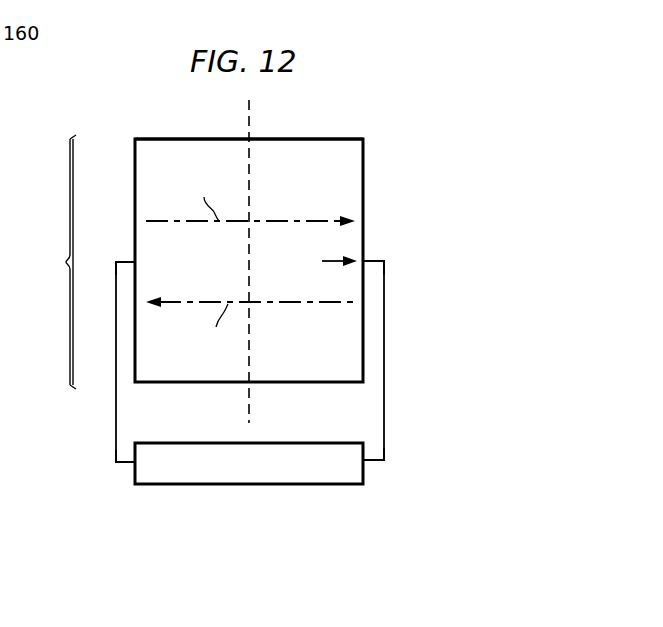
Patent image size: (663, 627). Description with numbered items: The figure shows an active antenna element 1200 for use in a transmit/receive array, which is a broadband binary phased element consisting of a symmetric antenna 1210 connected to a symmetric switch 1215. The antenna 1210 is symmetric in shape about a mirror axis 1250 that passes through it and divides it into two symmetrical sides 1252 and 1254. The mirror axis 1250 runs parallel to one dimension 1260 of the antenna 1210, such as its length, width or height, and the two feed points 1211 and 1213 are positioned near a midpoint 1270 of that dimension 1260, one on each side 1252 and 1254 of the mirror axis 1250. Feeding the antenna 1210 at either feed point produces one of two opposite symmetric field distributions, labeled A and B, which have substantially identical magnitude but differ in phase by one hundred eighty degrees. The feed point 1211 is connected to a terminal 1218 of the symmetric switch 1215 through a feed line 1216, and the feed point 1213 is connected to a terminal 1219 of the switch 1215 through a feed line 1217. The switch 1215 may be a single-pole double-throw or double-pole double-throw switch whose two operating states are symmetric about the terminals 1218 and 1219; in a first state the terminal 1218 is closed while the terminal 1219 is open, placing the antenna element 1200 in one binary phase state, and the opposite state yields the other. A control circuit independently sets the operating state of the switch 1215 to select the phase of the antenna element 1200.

The active antenna element 1200 is at (380, 84).
The symmetric antenna 1210 is at (364, 182).
The feed point 1211 is at (130, 258).
The feed point 1213 is at (368, 258).
The symmetric switch 1215 is at (300, 485).
The feed line 1216 is at (115, 420).
The feed line 1217 is at (386, 352).
The terminal 1218 is at (131, 469).
The terminal 1219 is at (372, 468).
The mirror axis 1250 is at (248, 398).
The symmetrical side 1252 is at (190, 138).
The symmetrical side 1254 is at (308, 138).
The dimension 1260 is at (44, 262).
The midpoint 1270 is at (326, 261).